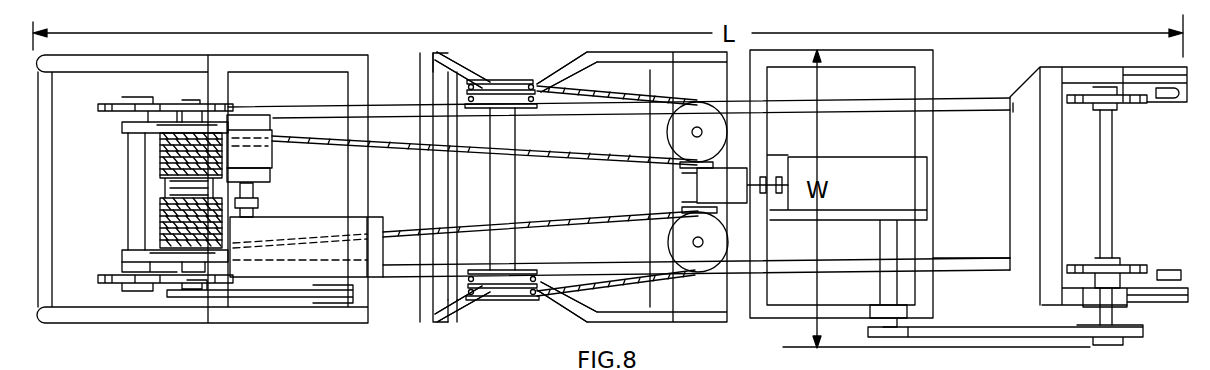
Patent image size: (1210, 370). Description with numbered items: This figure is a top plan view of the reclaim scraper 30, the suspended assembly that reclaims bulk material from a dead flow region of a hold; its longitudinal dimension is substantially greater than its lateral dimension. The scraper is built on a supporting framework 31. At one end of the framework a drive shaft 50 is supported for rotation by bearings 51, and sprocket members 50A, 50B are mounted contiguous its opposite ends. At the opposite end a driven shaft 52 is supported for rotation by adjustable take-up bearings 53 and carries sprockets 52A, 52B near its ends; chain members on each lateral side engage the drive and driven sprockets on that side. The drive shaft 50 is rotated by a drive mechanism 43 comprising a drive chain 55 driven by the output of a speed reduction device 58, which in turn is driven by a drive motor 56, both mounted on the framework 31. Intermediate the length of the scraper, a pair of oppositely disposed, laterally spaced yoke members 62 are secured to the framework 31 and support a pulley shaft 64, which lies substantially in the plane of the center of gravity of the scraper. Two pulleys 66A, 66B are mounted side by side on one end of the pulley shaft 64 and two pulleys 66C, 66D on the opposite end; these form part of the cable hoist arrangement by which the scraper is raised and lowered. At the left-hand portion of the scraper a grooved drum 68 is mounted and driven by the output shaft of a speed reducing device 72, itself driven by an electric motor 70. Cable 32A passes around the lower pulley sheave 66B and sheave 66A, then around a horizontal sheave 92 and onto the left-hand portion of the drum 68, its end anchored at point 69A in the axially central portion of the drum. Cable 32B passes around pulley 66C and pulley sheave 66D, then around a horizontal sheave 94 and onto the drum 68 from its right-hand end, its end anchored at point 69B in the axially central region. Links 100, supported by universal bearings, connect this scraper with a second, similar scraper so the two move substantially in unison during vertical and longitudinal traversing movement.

The reclaim scraper 30 is at (618, 193).
The supporting framework 31 is at (957, 263).
The cable 32A is at (613, 280).
The cable 32B is at (484, 117).
The drive mechanism 43 is at (897, 192).
The drive shaft 50 is at (1112, 226).
The drive sprocket 50A is at (1033, 303).
The drive sprocket 50B is at (1122, 105).
The bearings 51 is at (1122, 303).
The driven shaft 52 is at (130, 221).
The driven sprocket 52A is at (118, 283).
The driven sprocket 52B is at (122, 103).
The adjustable take-up bearings 53 is at (126, 128).
The drive chain 55 is at (1020, 337).
The drive motor 56 is at (730, 196).
The speed reduction device 58 is at (915, 190).
The yoke member 62 is at (549, 70).
The pulley shaft 64 is at (510, 190).
The pulley 66A is at (457, 313).
The pulley 66B is at (524, 280).
The pulley 66C is at (520, 104).
The pulley 66D is at (443, 53).
The grooved drum 68 is at (165, 185).
The anchor point 69A is at (258, 203).
The anchor point 69B is at (228, 175).
The electric motor 70 is at (268, 152).
The speed reducing device 72 is at (357, 214).
The horizontal sheave 92 is at (698, 270).
The horizontal sheave 94 is at (722, 138).
The link 100 is at (1165, 99).